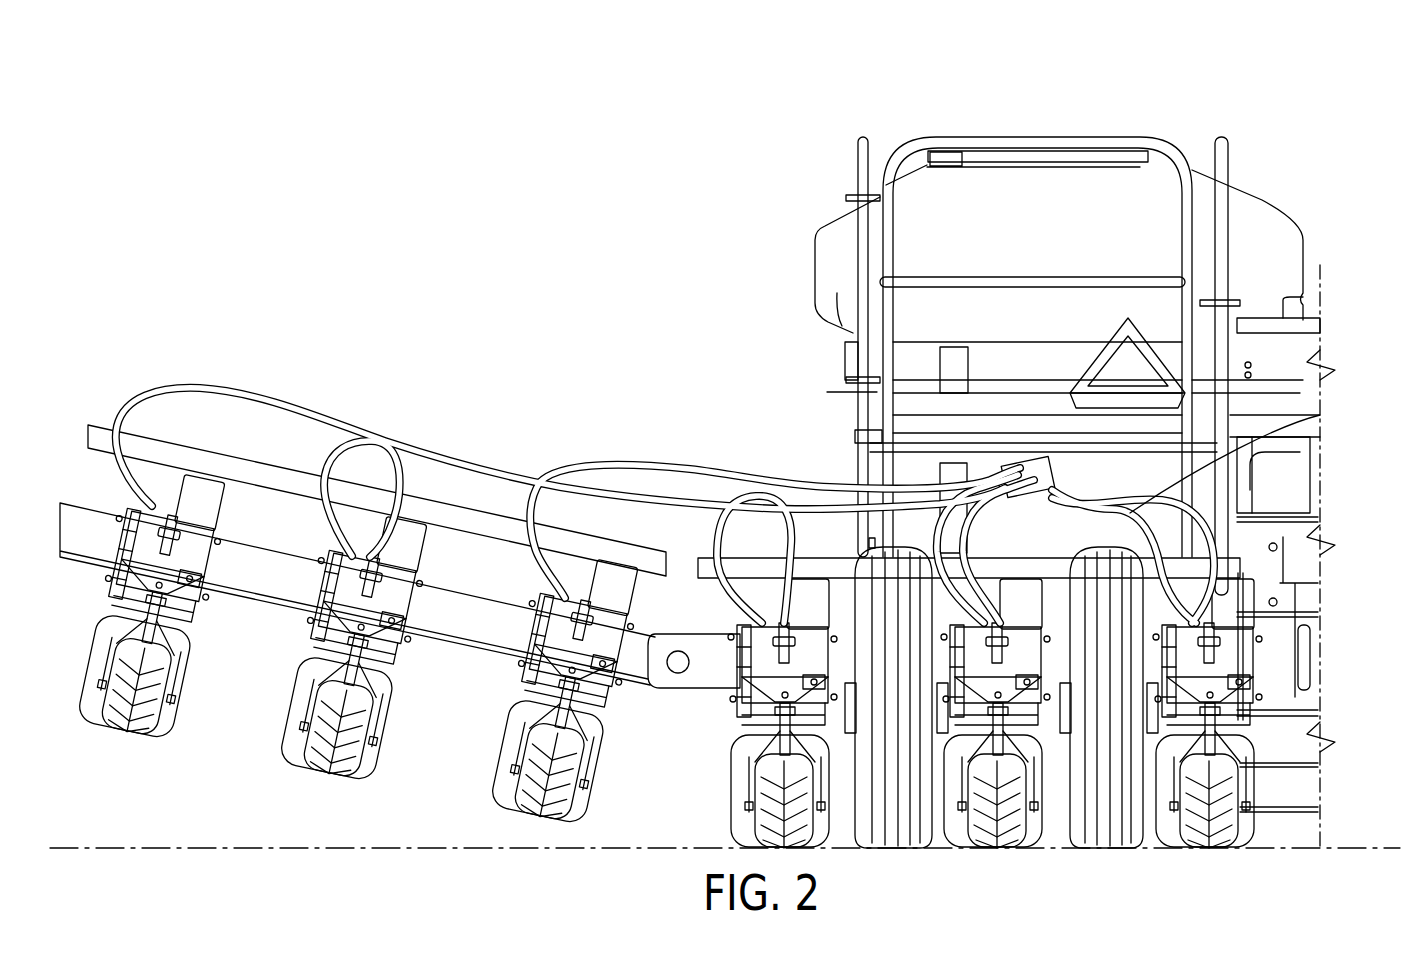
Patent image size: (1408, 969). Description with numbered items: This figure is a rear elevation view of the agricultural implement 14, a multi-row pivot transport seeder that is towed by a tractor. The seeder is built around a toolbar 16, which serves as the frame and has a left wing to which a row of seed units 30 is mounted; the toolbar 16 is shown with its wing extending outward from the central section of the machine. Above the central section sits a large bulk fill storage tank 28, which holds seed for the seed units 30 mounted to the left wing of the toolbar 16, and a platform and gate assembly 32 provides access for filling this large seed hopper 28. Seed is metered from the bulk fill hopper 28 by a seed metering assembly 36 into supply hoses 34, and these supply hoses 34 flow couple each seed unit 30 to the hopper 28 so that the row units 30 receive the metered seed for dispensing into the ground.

The agricultural implement 14 is at (1364, 126).
The toolbar 16 is at (463, 607).
The bulk fill storage tank 28 is at (1265, 192).
The row unit 30 is at (264, 710).
The platform and gate assembly 32 is at (897, 448).
The supply hose 34 is at (188, 390).
The seed metering assembly 36 is at (1045, 468).